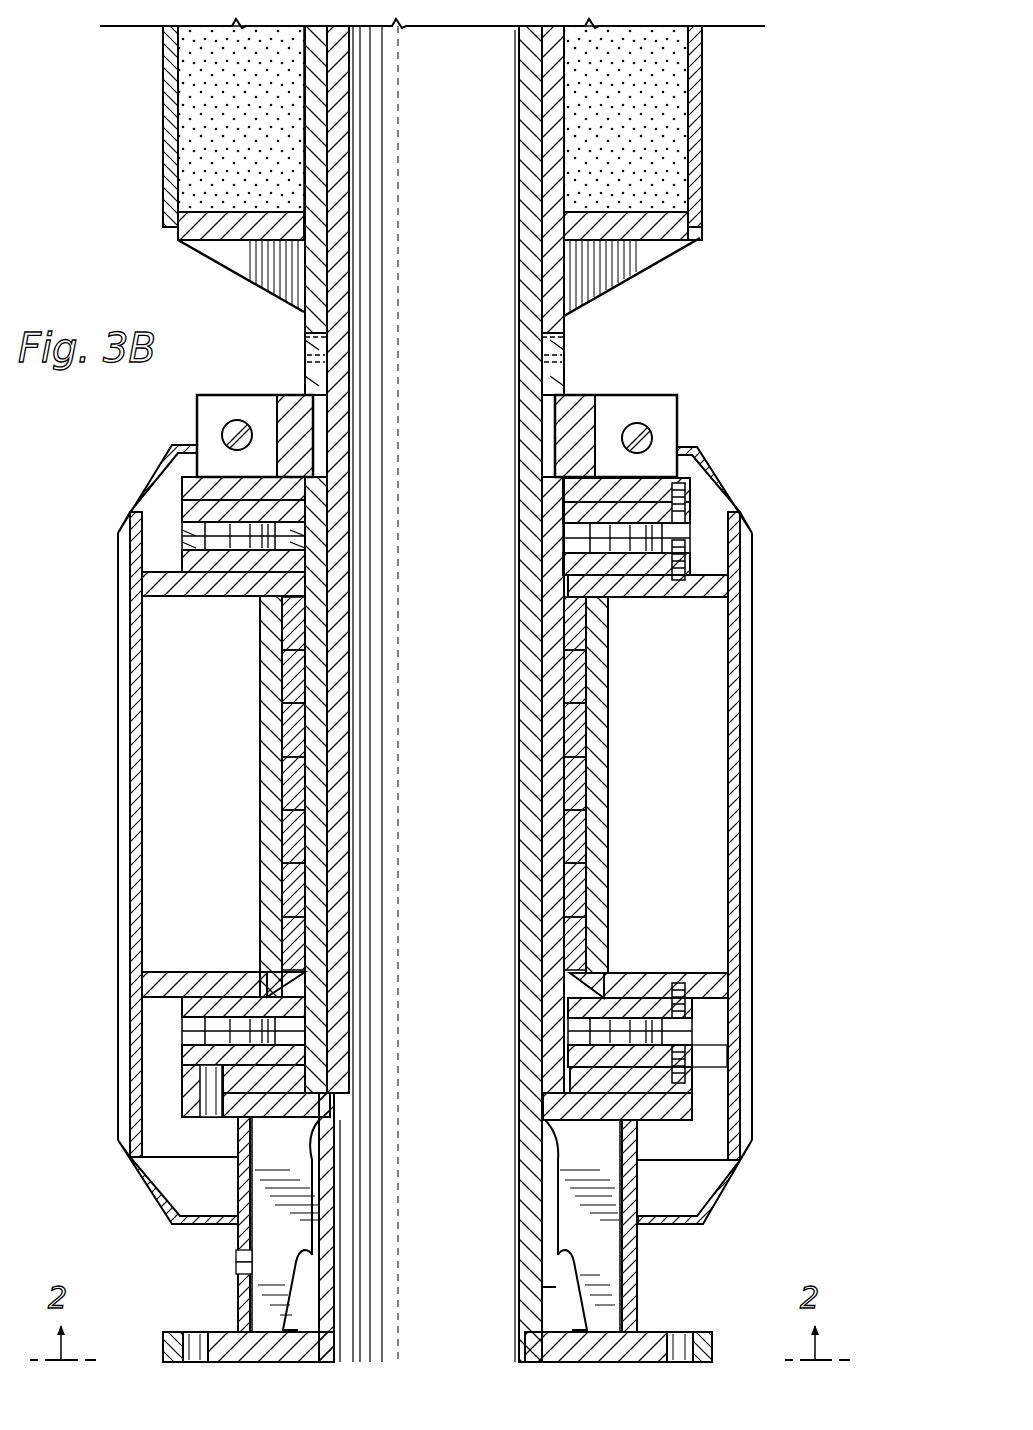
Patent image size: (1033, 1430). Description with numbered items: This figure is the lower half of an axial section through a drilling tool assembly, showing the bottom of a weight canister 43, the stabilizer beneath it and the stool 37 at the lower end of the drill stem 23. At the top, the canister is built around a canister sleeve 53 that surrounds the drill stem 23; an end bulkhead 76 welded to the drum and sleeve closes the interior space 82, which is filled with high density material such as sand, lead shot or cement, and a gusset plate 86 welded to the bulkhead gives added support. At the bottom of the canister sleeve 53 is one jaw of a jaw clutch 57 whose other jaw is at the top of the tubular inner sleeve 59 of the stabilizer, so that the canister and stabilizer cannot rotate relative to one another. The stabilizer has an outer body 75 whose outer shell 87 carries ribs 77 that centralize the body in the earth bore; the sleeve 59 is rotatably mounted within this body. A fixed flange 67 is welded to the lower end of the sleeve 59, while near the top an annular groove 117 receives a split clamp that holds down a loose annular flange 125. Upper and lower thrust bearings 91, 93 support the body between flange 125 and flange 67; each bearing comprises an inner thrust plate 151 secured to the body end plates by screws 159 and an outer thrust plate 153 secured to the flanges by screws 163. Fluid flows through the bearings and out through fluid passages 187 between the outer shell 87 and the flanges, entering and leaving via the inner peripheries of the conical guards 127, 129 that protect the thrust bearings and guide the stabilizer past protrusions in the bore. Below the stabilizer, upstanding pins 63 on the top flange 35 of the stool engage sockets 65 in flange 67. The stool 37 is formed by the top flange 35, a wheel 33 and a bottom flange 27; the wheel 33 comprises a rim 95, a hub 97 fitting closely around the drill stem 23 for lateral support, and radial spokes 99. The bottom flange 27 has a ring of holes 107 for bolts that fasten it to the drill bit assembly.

The drill stem 23 is at (519, 103).
The bottom flange 27 is at (164, 1350).
The wheel 33 is at (236, 1270).
The top flange 35 is at (556, 1110).
The stool 37 is at (236, 1258).
The weight canister 43 is at (704, 91).
The canister sleeve 53 is at (556, 300).
The jaw clutch 57 is at (570, 351).
The inner sleeve 59 is at (552, 760).
The upstanding pins 63 is at (205, 1102).
The sockets 65 is at (200, 1085).
The fixed flange 67 is at (562, 1086).
The outer body 75 is at (258, 767).
The end bulkhead 76 is at (626, 232).
The ribs 77 is at (120, 820).
The interior space 82 is at (668, 156).
The gusset plate 86 is at (236, 262).
The outer shell 87 is at (736, 768).
The upper thrust bearing 91 is at (172, 541).
The lower thrust bearing 93 is at (172, 1033).
The rim 95 is at (640, 1289).
The hub 97 is at (550, 1243).
The spokes 99 is at (260, 1236).
The ring of holes 107 is at (195, 1336).
The annular groove 117 is at (556, 410).
The annular flange 125 is at (566, 494).
The upper conical guard 127 is at (160, 470).
The lower conical guard 129 is at (150, 1205).
The inner thrust plate 151 is at (176, 560).
The outer thrust plate 153 is at (566, 518).
The screws 159 is at (690, 556).
The screws 163 is at (687, 500).
The fluid passages 187 is at (700, 482).